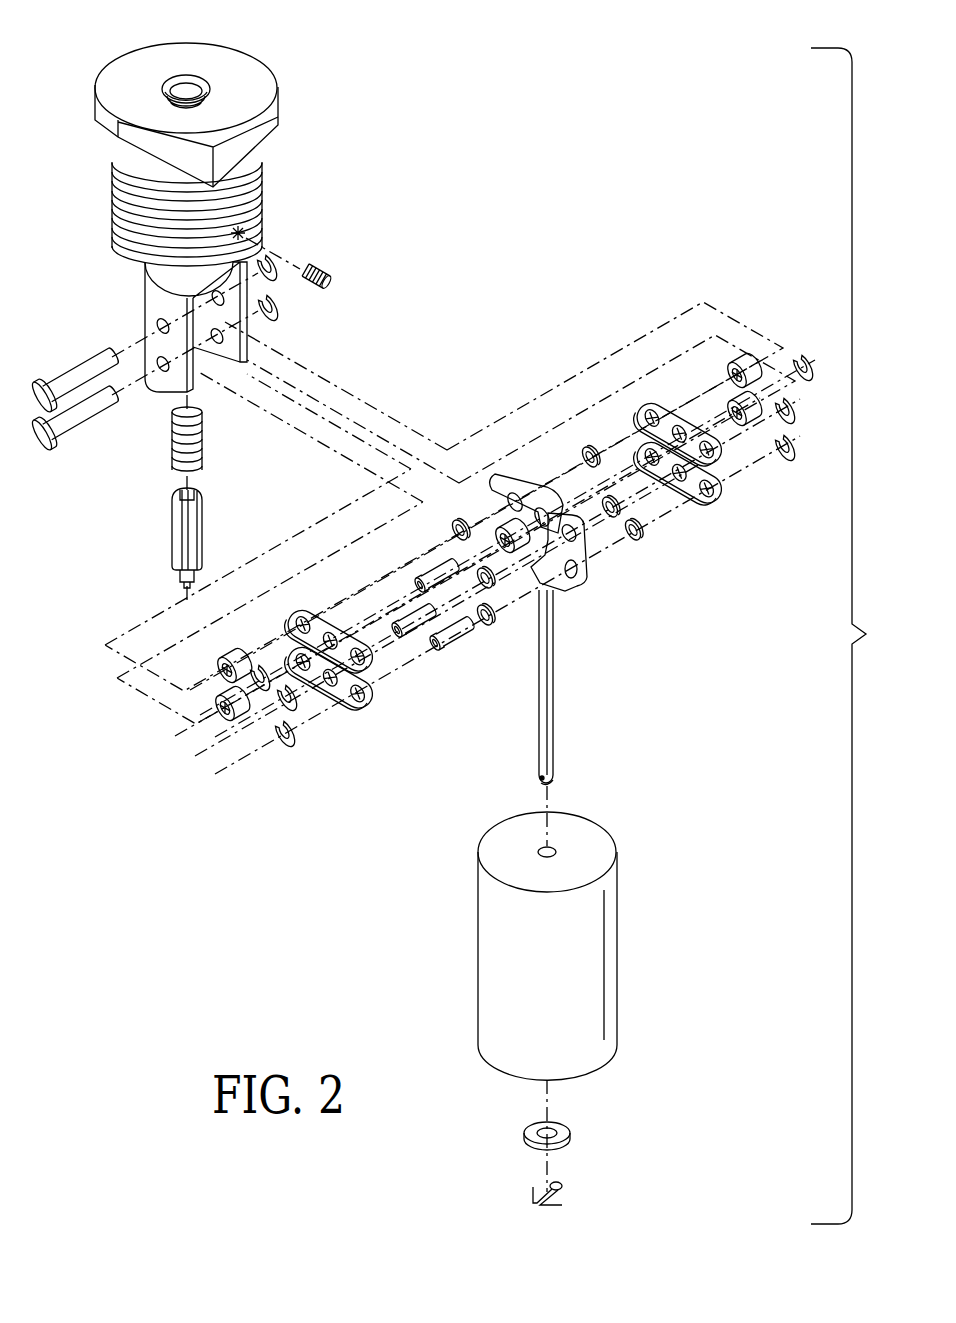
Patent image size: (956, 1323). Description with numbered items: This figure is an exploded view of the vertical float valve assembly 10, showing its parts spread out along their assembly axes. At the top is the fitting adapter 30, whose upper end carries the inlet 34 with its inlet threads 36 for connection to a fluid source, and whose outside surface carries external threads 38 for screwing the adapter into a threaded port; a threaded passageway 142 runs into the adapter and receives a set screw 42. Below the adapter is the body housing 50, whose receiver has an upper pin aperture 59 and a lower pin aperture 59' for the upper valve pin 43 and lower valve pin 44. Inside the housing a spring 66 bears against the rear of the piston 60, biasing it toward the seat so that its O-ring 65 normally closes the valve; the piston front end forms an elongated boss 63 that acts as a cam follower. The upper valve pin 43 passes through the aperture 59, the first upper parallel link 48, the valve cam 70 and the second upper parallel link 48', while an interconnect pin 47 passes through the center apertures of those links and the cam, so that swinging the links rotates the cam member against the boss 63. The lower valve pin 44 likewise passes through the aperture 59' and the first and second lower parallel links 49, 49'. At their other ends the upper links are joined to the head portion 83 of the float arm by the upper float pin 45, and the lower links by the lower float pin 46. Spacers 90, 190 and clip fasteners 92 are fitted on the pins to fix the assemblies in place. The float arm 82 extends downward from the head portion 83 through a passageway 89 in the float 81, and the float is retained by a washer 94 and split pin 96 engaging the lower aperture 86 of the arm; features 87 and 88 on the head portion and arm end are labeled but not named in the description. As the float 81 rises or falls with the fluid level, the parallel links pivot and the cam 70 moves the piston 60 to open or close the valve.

The vertical float valve assembly 10 is at (855, 636).
The fitting adapter 30 is at (263, 137).
The inlet 34 is at (198, 78).
The inlet threads 36 is at (182, 82).
The external threads 38 is at (263, 190).
The set screw 42 is at (328, 271).
The upper valve pin 43 is at (64, 383).
The lower valve pin 44 is at (84, 414).
The upper float pin 45 is at (418, 628).
The lower float pin 46 is at (458, 642).
The interconnect pin 47 is at (424, 573).
The first upper parallel link 48 is at (356, 654).
The first lower parallel link 49 is at (352, 688).
The second upper parallel link 48' is at (709, 449).
The second lower parallel link 49' is at (709, 482).
The body housing 50 is at (155, 293).
The upper pin aperture 59 is at (129, 321).
The lower pin aperture 59' is at (152, 390).
The piston 60 is at (198, 530).
The elongated boss 63 is at (183, 585).
The O-ring 65 is at (179, 571).
The spring 66 is at (200, 447).
The valve cam 70 is at (515, 478).
The float 81 is at (612, 975).
The float arm 82 is at (554, 712).
The head portion 83 is at (584, 567).
The lower aperture 86 is at (538, 778).
The pivot hole 87 is at (578, 531).
The rod hook 88 is at (555, 781).
The passageway 89 is at (556, 849).
The spacer 90 is at (214, 710).
The clip fastener 92 is at (280, 312).
The washer 94 is at (566, 1130).
The split pin 96 is at (563, 1184).
The threaded passageway 142 is at (252, 237).
The spacer 190 is at (466, 535).